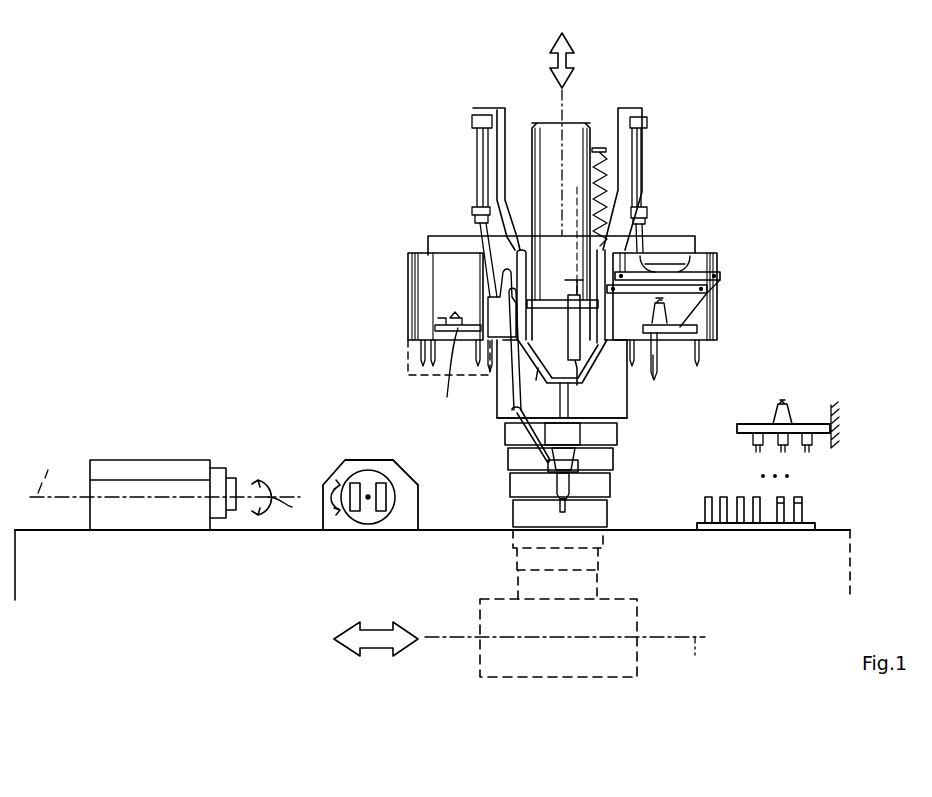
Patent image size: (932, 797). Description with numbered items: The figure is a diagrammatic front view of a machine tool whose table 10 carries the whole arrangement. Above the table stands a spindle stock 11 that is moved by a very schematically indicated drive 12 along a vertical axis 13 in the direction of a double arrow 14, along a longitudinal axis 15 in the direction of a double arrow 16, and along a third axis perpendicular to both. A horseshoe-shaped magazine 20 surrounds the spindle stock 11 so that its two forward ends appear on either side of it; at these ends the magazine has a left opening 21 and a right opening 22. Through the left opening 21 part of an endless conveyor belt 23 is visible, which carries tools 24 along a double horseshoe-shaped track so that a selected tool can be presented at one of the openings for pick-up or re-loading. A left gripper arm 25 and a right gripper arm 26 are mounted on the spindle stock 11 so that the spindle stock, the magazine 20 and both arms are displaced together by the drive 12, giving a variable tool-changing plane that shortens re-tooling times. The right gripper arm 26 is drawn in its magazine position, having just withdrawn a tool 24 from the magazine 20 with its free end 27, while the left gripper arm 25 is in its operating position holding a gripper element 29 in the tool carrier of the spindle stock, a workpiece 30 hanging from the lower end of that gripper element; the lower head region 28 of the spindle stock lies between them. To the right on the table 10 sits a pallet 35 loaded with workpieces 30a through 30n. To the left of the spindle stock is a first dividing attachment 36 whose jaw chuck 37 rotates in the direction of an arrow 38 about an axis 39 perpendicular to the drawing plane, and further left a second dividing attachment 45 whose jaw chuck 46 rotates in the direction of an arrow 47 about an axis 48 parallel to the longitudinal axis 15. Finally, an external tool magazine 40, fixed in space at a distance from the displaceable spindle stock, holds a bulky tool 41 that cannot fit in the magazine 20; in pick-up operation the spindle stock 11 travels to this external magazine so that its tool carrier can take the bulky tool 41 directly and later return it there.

The table 10 is at (665, 553).
The spindle stock 11 is at (685, 113).
The drive 12 is at (500, 651).
The vertical axis 13 is at (560, 108).
The double arrow 14 is at (566, 64).
The longitudinal axis 15 is at (690, 653).
The double arrow 16 is at (372, 648).
The magazine 20 is at (442, 245).
The left opening 21 is at (443, 300).
The right opening 22 is at (676, 256).
The endless conveyor belt 23 is at (460, 376).
The tool 24 is at (662, 365).
The left gripper arm 25 is at (488, 162).
The right gripper arm 26 is at (635, 178).
The free end 27 is at (695, 314).
The head 28 is at (525, 463).
The gripper element 29 is at (572, 486).
The workpiece 30 is at (566, 505).
The workpiece 30a is at (798, 497).
The workpiece 30n is at (710, 497).
The pallet 35 is at (768, 530).
The first dividing attachment 36 is at (355, 465).
The jaw chuck 37 is at (356, 512).
The arrow 38 is at (330, 497).
The axis 39 is at (368, 495).
The external tool magazine 40 is at (826, 426).
The bulky tool 41 is at (790, 410).
The second dividing attachment 45 is at (148, 460).
The jaw chuck 46 is at (236, 482).
The arrow 47 is at (279, 502).
The axis 48 is at (159, 472).